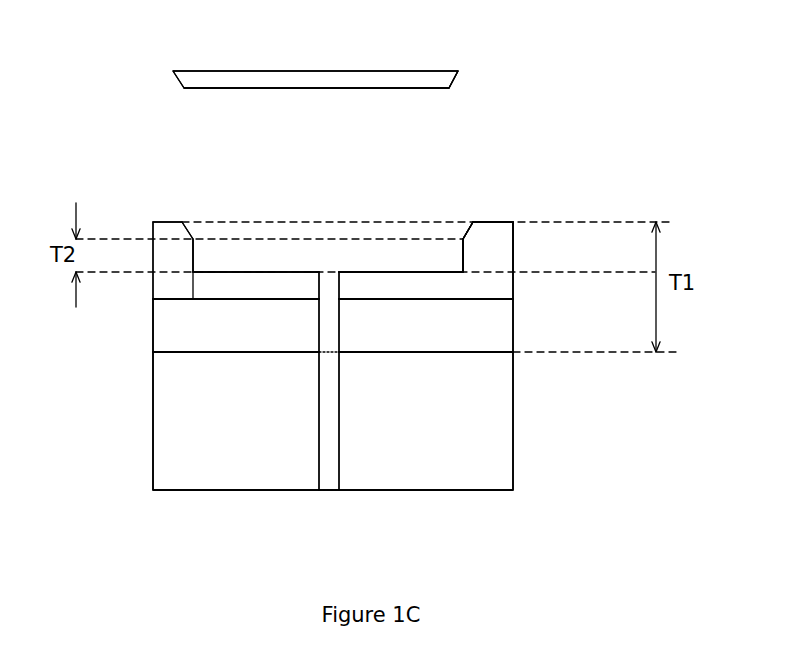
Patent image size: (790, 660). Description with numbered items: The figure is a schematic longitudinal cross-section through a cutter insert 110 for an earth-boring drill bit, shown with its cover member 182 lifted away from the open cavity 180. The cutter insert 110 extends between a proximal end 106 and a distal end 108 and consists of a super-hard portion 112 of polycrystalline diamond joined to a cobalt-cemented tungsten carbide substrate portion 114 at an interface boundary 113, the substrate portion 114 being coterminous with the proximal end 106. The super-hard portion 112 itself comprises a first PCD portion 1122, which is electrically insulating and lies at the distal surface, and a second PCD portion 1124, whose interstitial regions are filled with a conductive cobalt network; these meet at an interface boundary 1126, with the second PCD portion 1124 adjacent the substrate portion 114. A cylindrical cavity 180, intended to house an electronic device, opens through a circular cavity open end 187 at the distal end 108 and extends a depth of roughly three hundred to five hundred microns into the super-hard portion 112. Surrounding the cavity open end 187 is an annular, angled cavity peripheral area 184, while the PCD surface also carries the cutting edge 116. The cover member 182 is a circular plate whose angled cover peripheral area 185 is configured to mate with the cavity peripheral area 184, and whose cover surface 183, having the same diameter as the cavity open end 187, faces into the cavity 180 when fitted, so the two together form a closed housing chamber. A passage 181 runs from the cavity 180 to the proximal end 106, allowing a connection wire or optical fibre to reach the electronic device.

The cutter insert 110 is at (280, 275).
The cover member 182 is at (378, 82).
The cover surface 183 is at (295, 88).
The cover peripheral area 185 is at (453, 83).
The proximal end 106 is at (496, 498).
The super-hard portion 112 is at (432, 330).
The substrate portion 114 is at (495, 417).
The first PCD portion 1122 is at (493, 263).
The second PCD portion 1124 is at (497, 318).
The interface boundary 1126 is at (265, 299).
The interface boundary 113 is at (295, 352).
The cavity 180 is at (272, 253).
The cavity open end 187 is at (215, 235).
The cavity peripheral area 184 is at (466, 231).
The distal end 108 is at (498, 212).
The cutting edge 116 is at (515, 221).
The passage 181 is at (330, 470).